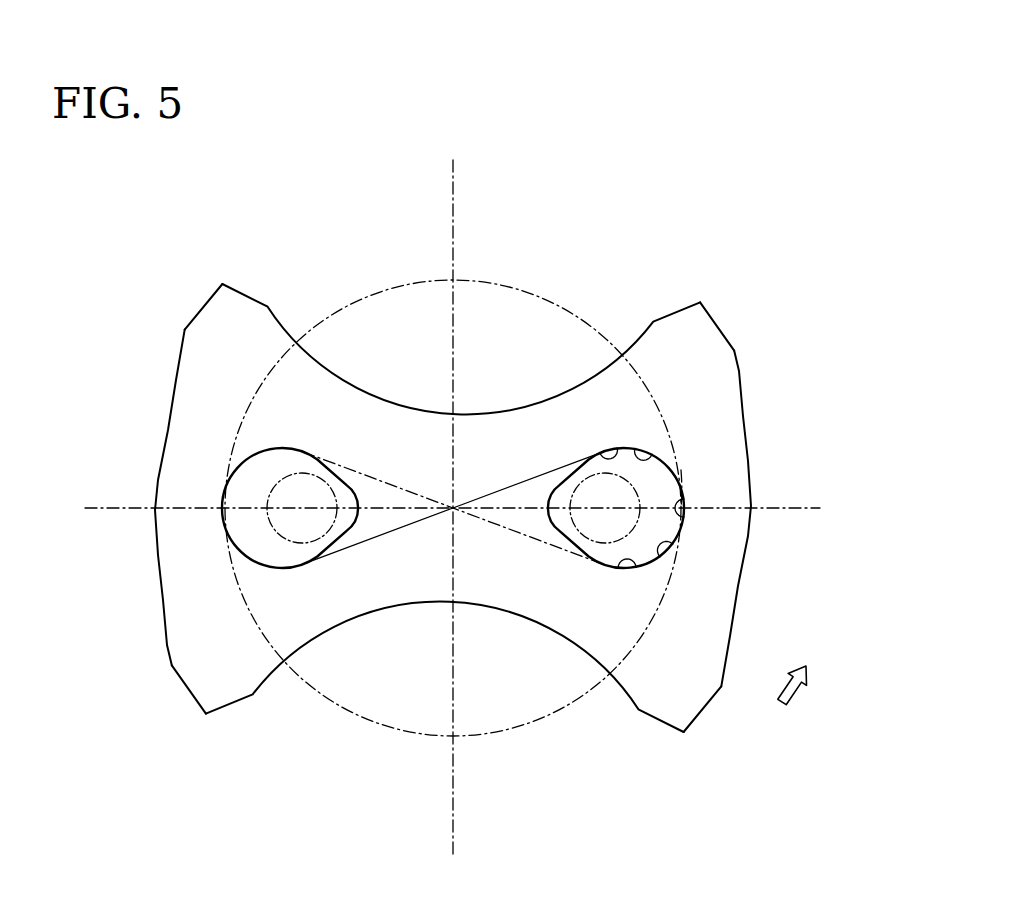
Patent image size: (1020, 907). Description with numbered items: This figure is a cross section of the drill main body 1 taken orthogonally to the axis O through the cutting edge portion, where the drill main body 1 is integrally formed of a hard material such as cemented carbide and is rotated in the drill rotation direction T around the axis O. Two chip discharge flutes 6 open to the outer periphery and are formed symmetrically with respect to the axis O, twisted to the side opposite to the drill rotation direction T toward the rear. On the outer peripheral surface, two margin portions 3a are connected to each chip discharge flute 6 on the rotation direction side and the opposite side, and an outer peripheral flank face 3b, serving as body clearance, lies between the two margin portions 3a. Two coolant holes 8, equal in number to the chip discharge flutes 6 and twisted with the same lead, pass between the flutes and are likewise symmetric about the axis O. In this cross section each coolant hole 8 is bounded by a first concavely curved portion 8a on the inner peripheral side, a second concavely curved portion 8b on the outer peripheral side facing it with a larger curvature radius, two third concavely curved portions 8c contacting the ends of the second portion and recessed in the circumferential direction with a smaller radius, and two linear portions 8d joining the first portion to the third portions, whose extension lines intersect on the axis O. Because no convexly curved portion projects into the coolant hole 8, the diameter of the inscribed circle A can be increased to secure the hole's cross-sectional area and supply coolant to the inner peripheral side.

The drill main body 1 is at (455, 509).
The margin portions 3a is at (203, 303).
The outer peripheral flank face 3b is at (163, 572).
The chip discharge flutes 6 is at (395, 250).
The coolant holes 8 is at (514, 523).
The first concavely curved portion 8a is at (553, 523).
The second concavely curved portion 8b is at (683, 500).
The third concavely curved portions 8c is at (643, 450).
The linear portions 8d is at (608, 454).
The inscribed circle A is at (670, 462).
The axis O is at (456, 504).
The drill rotation direction T is at (800, 695).